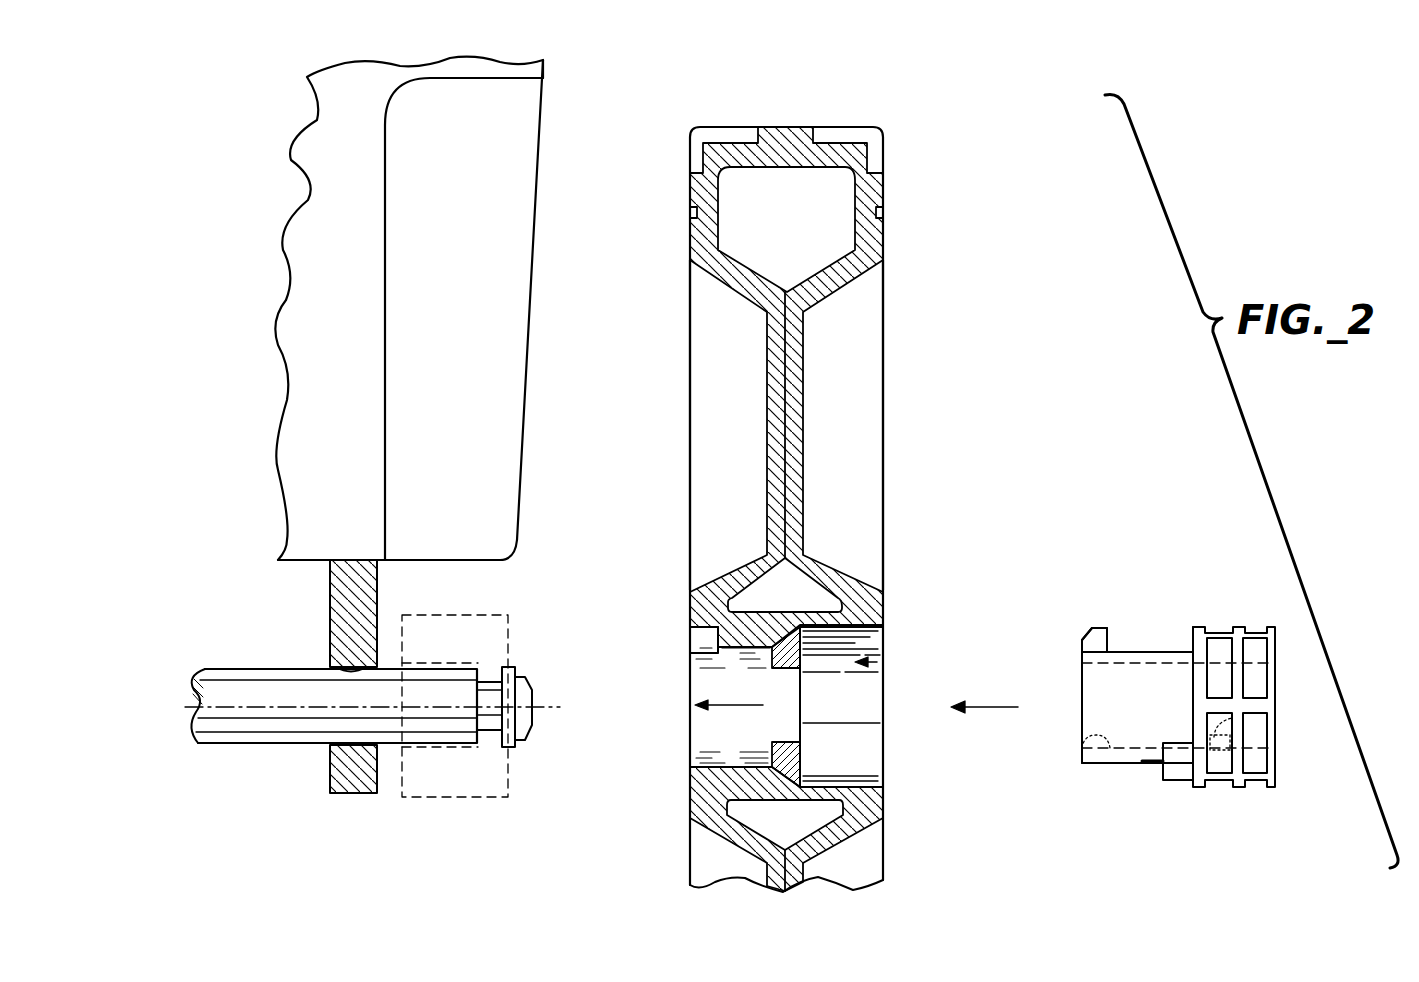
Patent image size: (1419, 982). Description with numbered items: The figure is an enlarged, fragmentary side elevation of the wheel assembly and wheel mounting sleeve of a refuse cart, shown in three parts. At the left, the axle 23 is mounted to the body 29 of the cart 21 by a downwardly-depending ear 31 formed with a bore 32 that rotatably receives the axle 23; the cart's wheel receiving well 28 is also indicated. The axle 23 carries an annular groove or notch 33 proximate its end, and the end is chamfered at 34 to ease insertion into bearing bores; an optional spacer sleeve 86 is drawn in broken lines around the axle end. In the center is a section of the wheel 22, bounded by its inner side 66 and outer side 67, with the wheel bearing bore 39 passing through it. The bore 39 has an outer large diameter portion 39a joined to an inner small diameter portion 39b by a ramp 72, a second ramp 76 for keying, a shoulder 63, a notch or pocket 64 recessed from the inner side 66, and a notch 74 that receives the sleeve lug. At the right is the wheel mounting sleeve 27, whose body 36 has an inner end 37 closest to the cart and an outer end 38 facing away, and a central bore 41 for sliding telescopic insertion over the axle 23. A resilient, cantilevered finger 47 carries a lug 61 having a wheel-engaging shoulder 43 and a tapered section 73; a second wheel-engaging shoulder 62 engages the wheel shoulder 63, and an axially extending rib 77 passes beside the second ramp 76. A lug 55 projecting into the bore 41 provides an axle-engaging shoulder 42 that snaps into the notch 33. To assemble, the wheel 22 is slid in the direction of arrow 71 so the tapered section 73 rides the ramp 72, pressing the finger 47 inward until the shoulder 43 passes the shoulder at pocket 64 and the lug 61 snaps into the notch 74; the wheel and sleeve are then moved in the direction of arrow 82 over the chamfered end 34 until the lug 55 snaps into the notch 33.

The cart 21 is at (285, 158).
The wheel receiving well 28 is at (396, 306).
The body 29 is at (545, 64).
The ear 31 is at (350, 786).
The bore 32 is at (332, 665).
The axle 23 is at (295, 736).
The annular groove or notch 33 is at (487, 746).
The chamfered end 34 is at (530, 678).
The spacer sleeve 86 is at (495, 797).
The wheel 22 is at (883, 232).
The inner side 66 is at (690, 375).
The outer side 67 is at (883, 328).
The notch or pocket 64 is at (693, 632).
The notch 74 is at (690, 643).
The inner small diameter portion 39b is at (741, 648).
The arrow 82 is at (730, 708).
The wheel bearing bore 39 is at (878, 662).
The outer large diameter portion 39a is at (857, 628).
The ramp 72 is at (802, 648).
The shoulder 63 is at (803, 722).
The second ramp 76 is at (788, 770).
The arrow 71 is at (1001, 707).
The wheel mounting sleeve 27 is at (1192, 582).
The inner end 37 is at (1082, 680).
The wheel-engaging shoulder 43 is at (1092, 628).
The ramp or tapered section 73 is at (1082, 640).
The lug 61 is at (1097, 628).
The resilient finger 47 is at (1128, 652).
The second wheel-engaging shoulder 62 is at (1191, 640).
The body 36 is at (1130, 742).
The rib 77 is at (1181, 766).
The outer end 38 is at (1275, 665).
The lug 55 is at (1234, 718).
The axle-engaging shoulder 42 is at (1232, 737).
The central bore 41 is at (1082, 742).